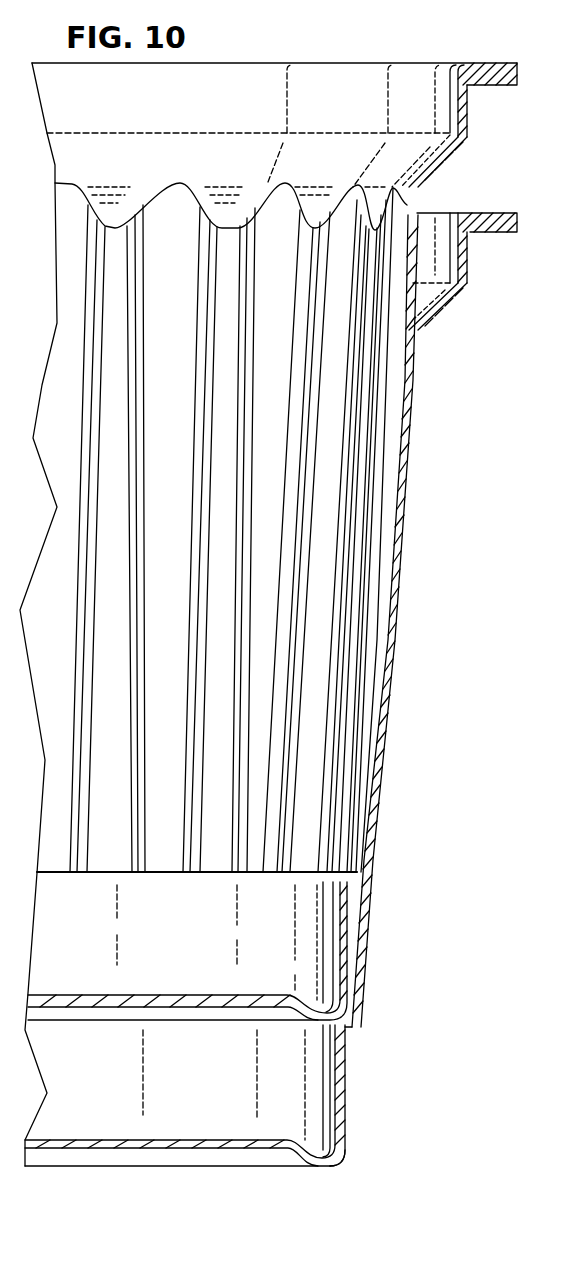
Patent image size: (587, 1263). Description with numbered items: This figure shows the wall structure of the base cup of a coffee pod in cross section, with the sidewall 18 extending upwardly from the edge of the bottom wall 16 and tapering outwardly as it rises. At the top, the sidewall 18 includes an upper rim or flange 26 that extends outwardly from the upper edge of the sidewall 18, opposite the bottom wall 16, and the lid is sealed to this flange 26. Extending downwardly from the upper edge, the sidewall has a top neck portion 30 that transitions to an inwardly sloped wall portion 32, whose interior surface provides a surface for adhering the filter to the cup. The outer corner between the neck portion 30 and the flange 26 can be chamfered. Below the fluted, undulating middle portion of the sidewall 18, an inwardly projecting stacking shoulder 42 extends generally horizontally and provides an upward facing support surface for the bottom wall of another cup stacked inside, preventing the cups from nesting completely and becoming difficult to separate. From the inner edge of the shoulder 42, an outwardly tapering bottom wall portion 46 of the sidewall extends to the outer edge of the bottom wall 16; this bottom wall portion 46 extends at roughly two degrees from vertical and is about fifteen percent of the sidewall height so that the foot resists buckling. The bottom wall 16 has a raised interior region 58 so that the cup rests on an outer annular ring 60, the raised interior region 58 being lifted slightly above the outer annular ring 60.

The bottom wall portion 16 is at (265, 1167).
The sidewall portion 18 is at (397, 442).
The upper rim or flange 26 is at (503, 63).
The top neck portion 30 is at (467, 108).
The inwardly sloped wall portion 32 is at (447, 160).
The stacking shoulder 42 is at (345, 885).
The bottom wall portion of the sidewall 46 is at (343, 972).
The raised interior region 58 is at (230, 1153).
The outer annular ring 60 is at (322, 1168).